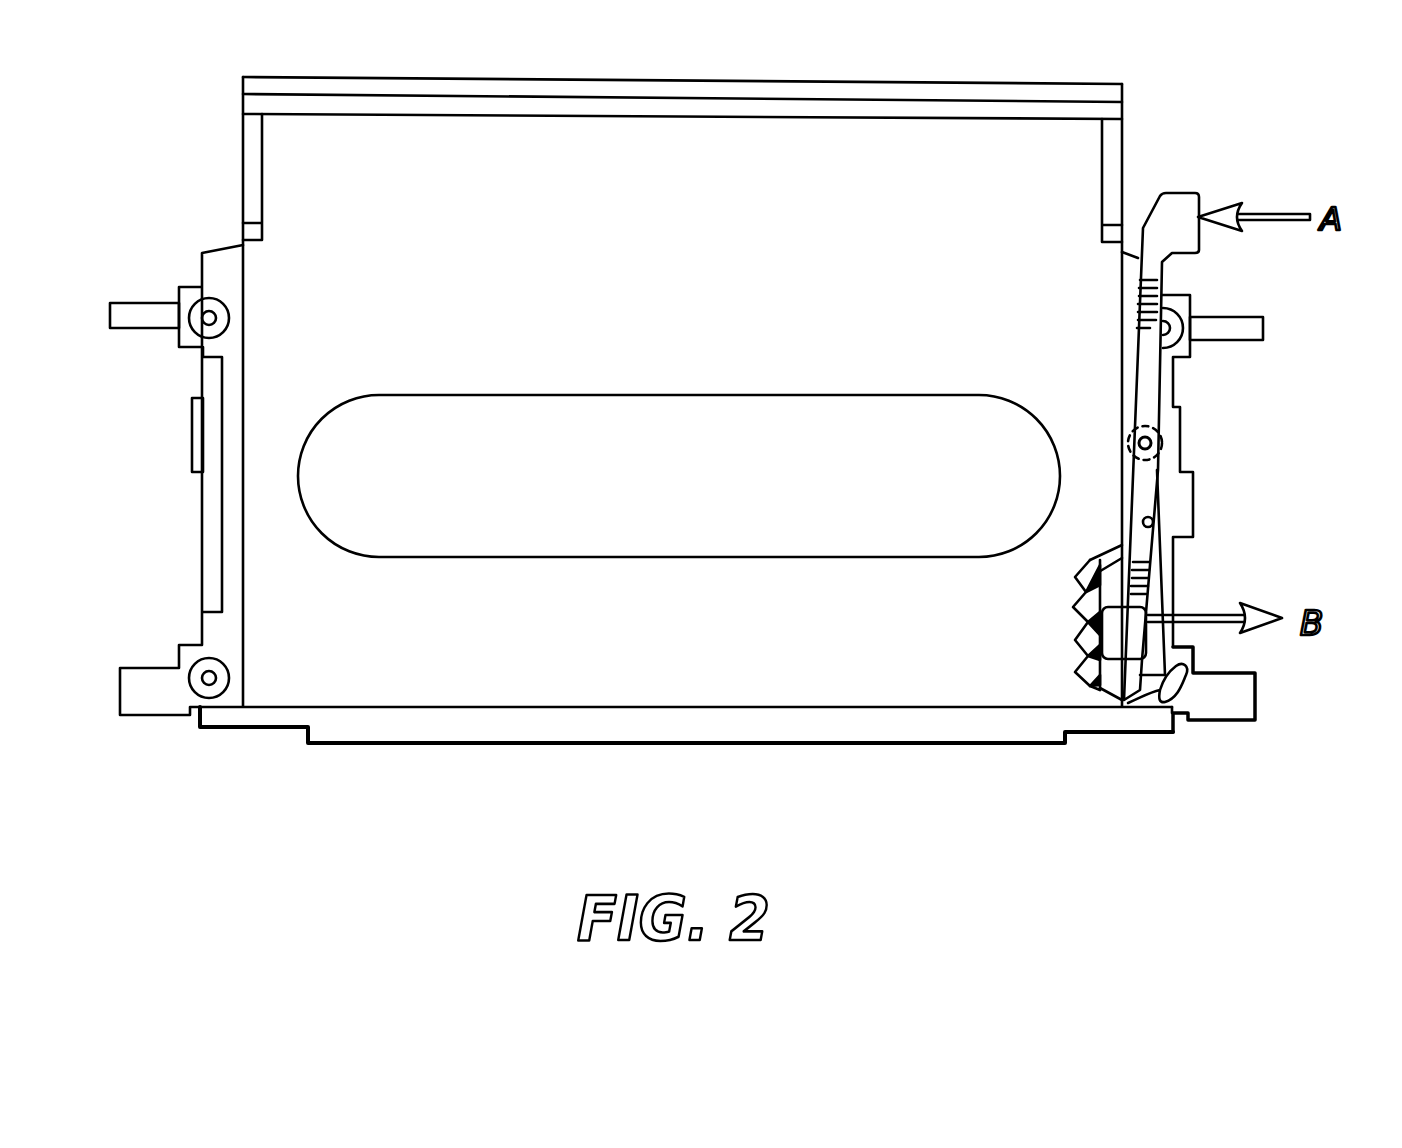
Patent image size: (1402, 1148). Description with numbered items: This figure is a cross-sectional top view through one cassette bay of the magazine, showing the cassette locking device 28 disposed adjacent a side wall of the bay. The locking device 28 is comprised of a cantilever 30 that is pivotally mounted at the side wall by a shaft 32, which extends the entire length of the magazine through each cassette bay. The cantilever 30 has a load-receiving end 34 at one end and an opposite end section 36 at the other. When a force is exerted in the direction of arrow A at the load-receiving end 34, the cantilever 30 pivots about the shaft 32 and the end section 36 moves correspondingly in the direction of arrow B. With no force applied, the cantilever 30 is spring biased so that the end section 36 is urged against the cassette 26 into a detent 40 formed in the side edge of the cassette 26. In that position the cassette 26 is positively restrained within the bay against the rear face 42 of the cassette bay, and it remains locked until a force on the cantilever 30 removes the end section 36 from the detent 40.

The cassette 26 is at (698, 238).
The locking device 28 is at (1208, 398).
The cantilever 30 is at (1148, 280).
The shaft 32 is at (1152, 443).
The load-receiving end 34 is at (1177, 190).
The end section 36 is at (1133, 636).
The detent 40 is at (1112, 592).
The rear face 42 is at (835, 722).